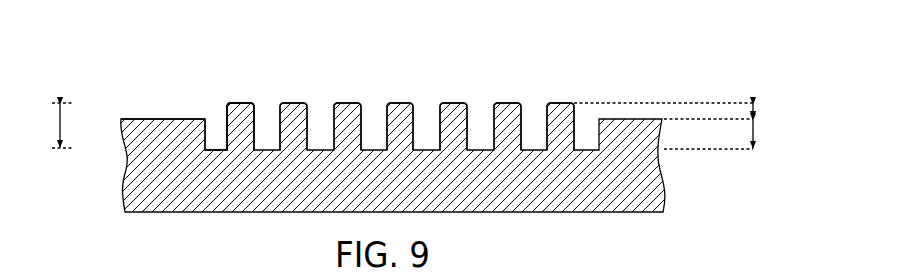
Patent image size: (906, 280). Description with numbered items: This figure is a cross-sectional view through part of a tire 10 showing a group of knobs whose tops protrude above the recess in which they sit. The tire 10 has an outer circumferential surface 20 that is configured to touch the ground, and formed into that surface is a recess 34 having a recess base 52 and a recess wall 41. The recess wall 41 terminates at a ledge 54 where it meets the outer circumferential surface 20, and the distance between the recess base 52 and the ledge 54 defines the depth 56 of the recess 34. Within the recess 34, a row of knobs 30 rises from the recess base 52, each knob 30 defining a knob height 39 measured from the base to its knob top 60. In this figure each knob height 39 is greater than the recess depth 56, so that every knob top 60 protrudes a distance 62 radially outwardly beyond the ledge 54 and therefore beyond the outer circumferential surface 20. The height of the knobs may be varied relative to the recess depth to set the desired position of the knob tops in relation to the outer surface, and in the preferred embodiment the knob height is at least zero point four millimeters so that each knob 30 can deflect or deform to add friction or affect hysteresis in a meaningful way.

The tire 10 is at (437, 140).
The outer circumferential surface 20 is at (142, 118).
The knob 30 is at (256, 110).
The recess 34 is at (421, 89).
The knob height 39 is at (51, 125).
The recess wall 41 is at (210, 128).
The recess base 52 is at (213, 150).
The ledge 54 is at (207, 116).
The depth 56 is at (754, 128).
The knob top 60 is at (240, 103).
The distance 62 is at (755, 111).